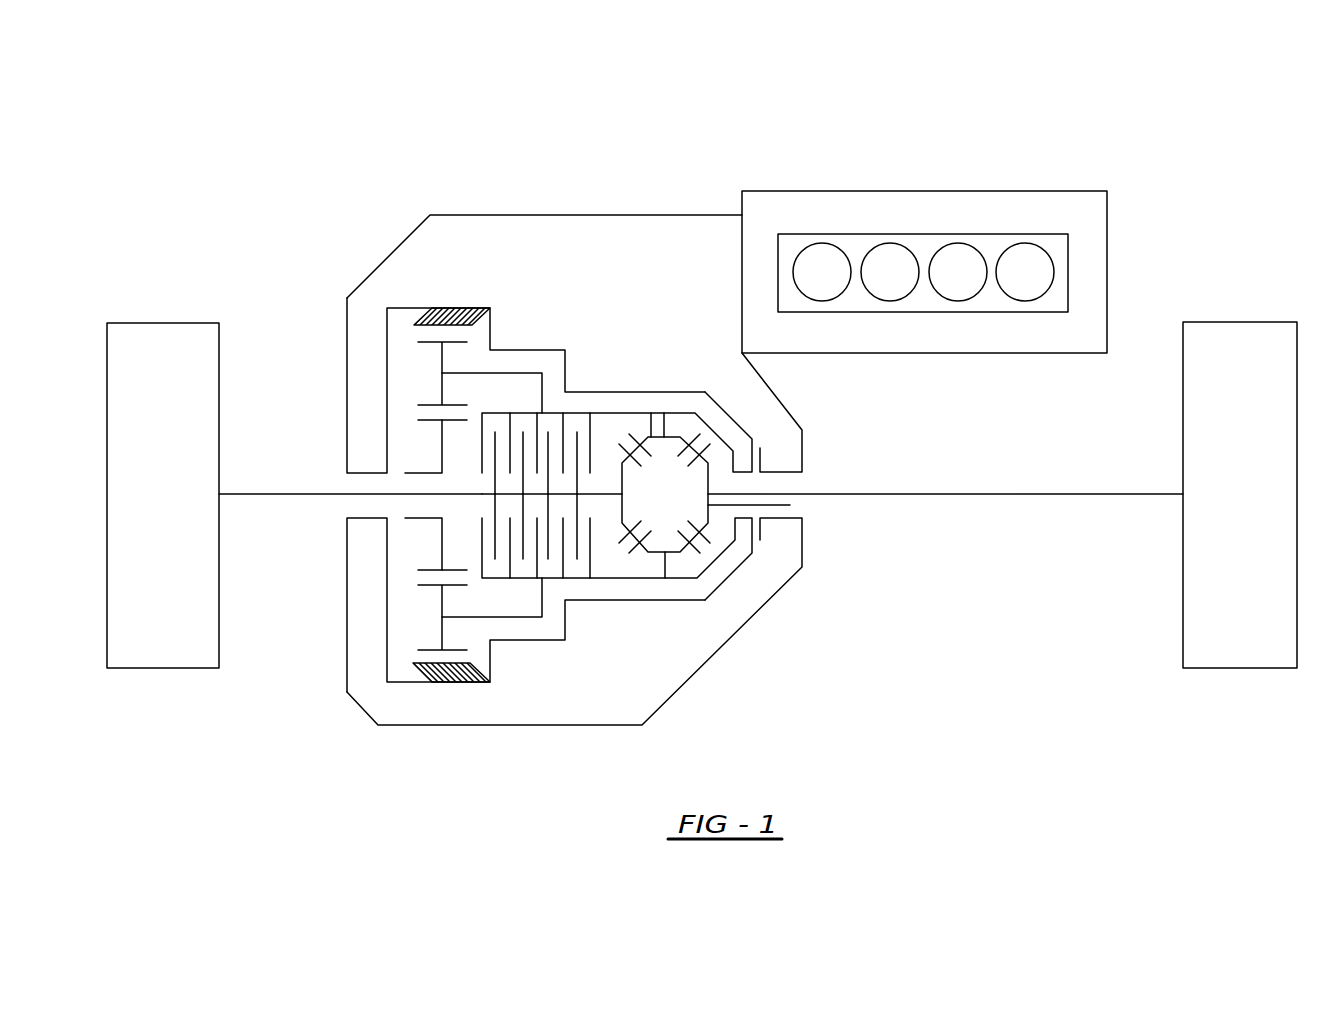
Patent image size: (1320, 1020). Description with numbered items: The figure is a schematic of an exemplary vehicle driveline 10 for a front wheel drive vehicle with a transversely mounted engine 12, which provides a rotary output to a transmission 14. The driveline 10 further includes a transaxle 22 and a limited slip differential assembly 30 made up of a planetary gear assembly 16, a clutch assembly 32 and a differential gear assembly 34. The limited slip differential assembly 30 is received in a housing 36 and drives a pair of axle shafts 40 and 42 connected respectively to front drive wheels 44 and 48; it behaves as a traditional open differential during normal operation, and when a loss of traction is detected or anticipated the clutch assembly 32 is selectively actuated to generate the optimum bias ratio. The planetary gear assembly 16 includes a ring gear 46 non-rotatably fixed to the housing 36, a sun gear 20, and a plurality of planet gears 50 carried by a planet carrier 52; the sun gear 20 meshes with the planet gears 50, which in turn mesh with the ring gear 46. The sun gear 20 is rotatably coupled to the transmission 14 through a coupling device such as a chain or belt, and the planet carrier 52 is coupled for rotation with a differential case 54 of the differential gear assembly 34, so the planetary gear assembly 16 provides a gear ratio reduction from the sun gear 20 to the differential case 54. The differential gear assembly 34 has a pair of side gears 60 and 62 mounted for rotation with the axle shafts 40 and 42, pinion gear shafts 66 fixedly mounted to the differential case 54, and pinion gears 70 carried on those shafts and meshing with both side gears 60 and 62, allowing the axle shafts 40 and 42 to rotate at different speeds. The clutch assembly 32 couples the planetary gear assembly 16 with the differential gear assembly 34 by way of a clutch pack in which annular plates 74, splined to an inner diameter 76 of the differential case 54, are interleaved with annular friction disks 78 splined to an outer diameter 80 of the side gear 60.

The vehicle driveline 10 is at (1202, 197).
The engine 12 is at (915, 202).
The transmission 14 is at (554, 235).
The planetary gear assembly 16 is at (387, 443).
The sun gear 20 is at (442, 447).
The transaxle 22 is at (358, 345).
The limited slip differential assembly 30 is at (627, 400).
The clutch assembly 32 is at (519, 574).
The differential gear assembly 34 is at (722, 423).
The housing 36 is at (602, 390).
The axle shaft 40 is at (270, 497).
The axle shaft 42 is at (977, 497).
The front drive wheel 44 is at (160, 357).
The ring gear 46 is at (445, 307).
The front drive wheel 48 is at (1228, 650).
The planet gears 50 is at (442, 360).
The planet carrier 52 is at (518, 372).
The differential case 54 is at (735, 452).
The side gear 60 is at (623, 514).
The side gear 62 is at (790, 505).
The pinion gear shafts 66 is at (666, 424).
The pinion gears 70 is at (651, 432).
The annular plates 74 is at (510, 562).
The inner diameter 76 is at (522, 417).
The annular friction disks 78 is at (495, 441).
The outer diameter 80 is at (610, 493).